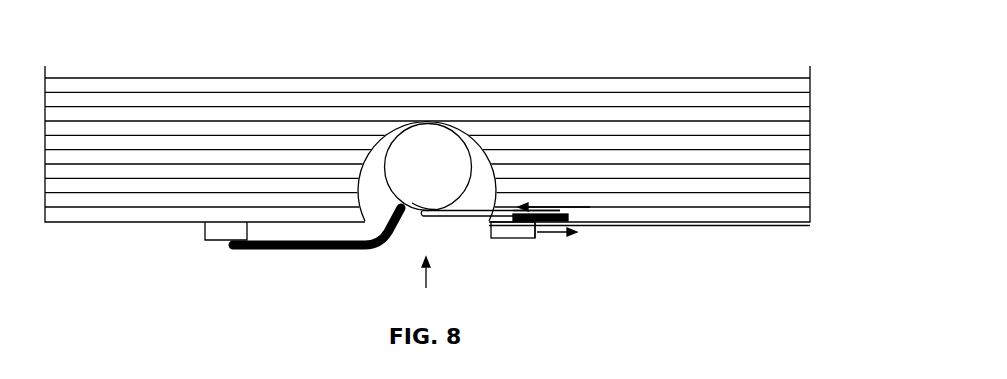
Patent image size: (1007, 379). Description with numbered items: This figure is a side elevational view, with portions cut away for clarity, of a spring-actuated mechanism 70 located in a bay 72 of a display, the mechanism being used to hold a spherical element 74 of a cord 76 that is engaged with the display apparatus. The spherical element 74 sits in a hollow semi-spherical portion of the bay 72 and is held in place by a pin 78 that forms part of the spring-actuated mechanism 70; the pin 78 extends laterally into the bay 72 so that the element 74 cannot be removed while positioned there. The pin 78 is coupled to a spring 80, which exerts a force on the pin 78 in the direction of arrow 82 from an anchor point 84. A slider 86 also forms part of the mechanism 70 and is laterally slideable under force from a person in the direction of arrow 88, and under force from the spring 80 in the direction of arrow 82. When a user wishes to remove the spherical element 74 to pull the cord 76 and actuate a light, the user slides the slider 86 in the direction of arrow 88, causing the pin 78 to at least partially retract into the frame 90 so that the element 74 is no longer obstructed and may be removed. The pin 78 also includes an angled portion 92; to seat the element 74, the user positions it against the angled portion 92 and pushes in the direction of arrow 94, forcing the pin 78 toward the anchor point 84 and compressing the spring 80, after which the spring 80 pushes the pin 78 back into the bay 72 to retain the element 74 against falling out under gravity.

The spring-actuated mechanism 70 is at (515, 240).
The bay 72 is at (492, 163).
The spherical element 74 is at (452, 134).
The cord 76 is at (308, 251).
The pin 78 is at (465, 217).
The spring 80 is at (560, 213).
The arrow 82 is at (546, 212).
The anchor point 84 is at (572, 212).
The slider 86 is at (536, 240).
The arrow 88 is at (575, 233).
The frame 90 is at (720, 72).
The angled portion 92 is at (419, 213).
The arrow 94 is at (428, 281).